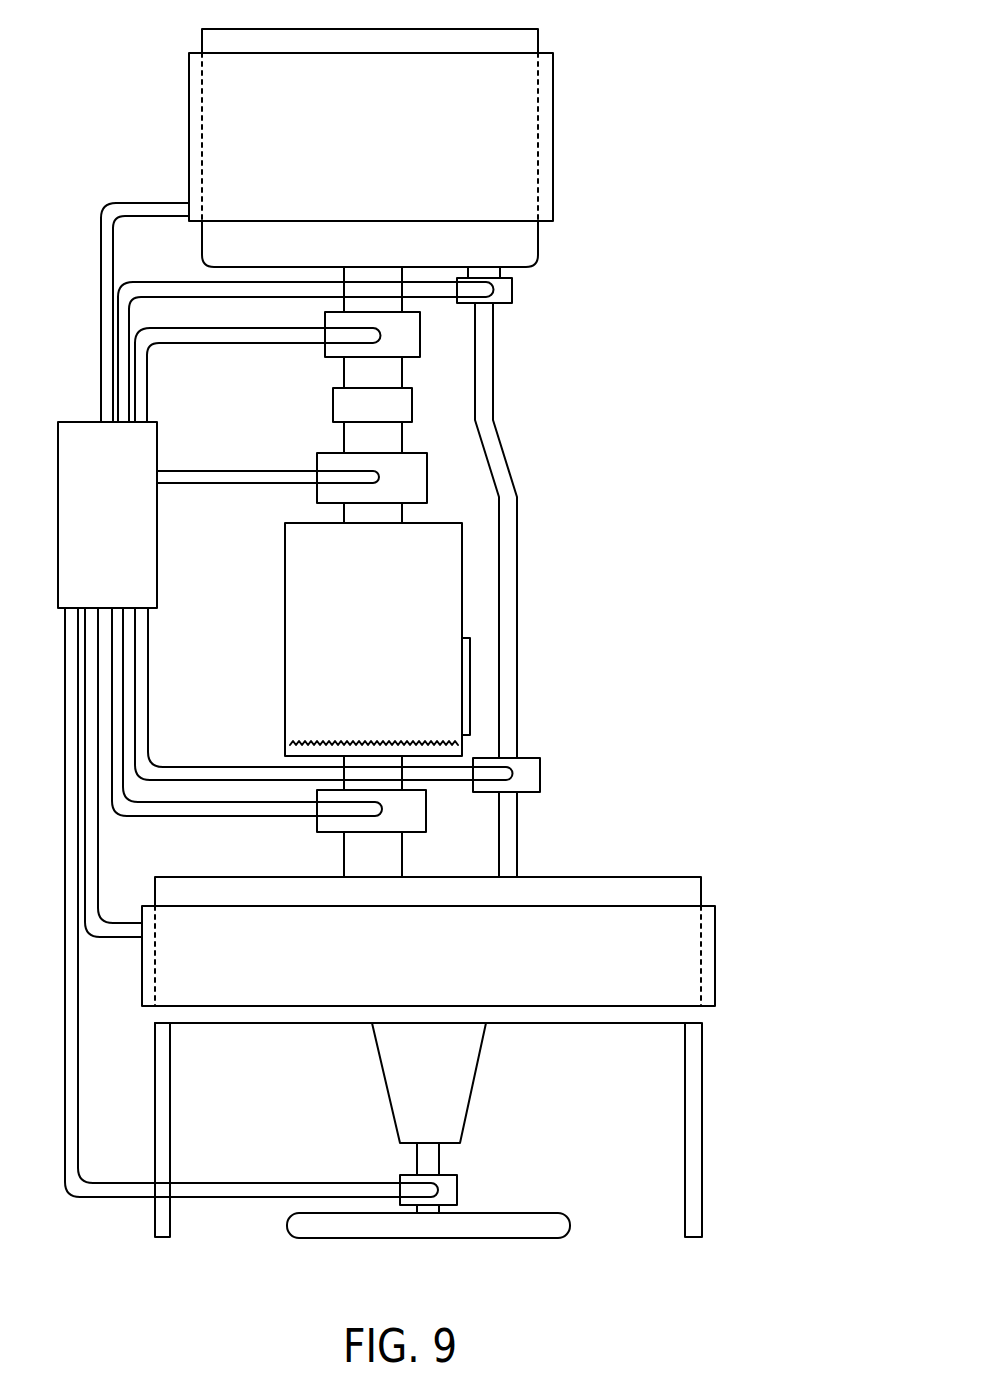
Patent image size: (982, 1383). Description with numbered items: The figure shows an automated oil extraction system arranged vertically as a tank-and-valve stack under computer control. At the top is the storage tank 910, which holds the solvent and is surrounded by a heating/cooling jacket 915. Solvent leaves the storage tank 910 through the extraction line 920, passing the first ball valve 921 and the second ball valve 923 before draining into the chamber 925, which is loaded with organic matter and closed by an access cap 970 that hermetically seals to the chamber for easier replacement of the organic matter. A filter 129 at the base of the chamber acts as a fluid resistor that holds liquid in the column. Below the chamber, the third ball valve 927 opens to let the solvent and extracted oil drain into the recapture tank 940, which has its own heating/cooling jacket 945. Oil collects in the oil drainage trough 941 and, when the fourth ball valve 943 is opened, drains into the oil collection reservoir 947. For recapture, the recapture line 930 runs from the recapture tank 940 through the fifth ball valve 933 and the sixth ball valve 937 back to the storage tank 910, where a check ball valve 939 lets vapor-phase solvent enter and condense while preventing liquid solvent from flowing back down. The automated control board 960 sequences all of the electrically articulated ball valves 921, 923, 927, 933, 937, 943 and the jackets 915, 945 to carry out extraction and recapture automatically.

The storage tank 910 is at (203, 28).
The heating/cooling jacket 915 is at (553, 127).
The check ball valve 939 is at (550, 272).
The extraction line 920 is at (343, 277).
The sixth ball valve 937 is at (505, 290).
The recapture line 930 is at (512, 487).
The first ball valve 921 is at (330, 352).
The second ball valve 923 is at (330, 453).
The automated control board 960 is at (126, 524).
The chamber 925 is at (395, 622).
The filter 129 is at (290, 743).
The access cap 970 is at (470, 702).
The fifth ball valve 933 is at (540, 780).
The third ball valve 927 is at (340, 833).
The recapture tank 940 is at (688, 888).
The heating/cooling jacket 945 is at (716, 950).
The oil drainage trough 941 is at (458, 1068).
The fourth ball valve 943 is at (457, 1178).
The oil collection reservoir 947 is at (540, 1238).